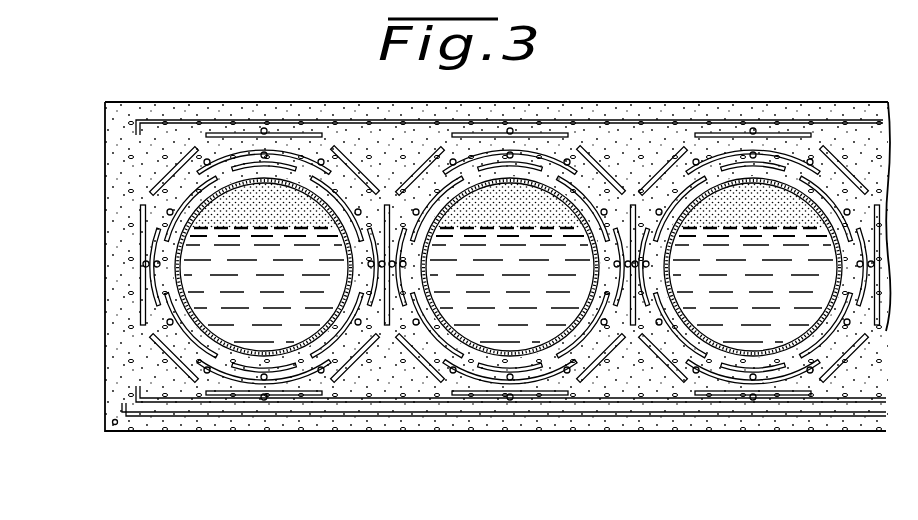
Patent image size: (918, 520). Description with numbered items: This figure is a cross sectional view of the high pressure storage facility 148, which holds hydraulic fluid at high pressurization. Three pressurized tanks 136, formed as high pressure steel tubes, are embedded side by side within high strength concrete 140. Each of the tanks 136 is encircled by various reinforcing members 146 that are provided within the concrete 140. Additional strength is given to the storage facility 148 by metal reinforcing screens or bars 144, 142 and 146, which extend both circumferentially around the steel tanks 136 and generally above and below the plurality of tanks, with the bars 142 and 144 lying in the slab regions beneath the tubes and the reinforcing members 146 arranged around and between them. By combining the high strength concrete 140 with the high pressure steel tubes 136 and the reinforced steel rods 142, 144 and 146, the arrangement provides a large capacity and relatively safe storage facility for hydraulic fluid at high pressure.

The pressurized tanks 136 is at (206, 197).
The concrete 140 is at (114, 426).
The reinforcing bars 142 is at (206, 417).
The reinforcing bars 144 is at (328, 398).
The reinforcing members 146 is at (480, 393).
The storage facility 148 is at (248, 102).